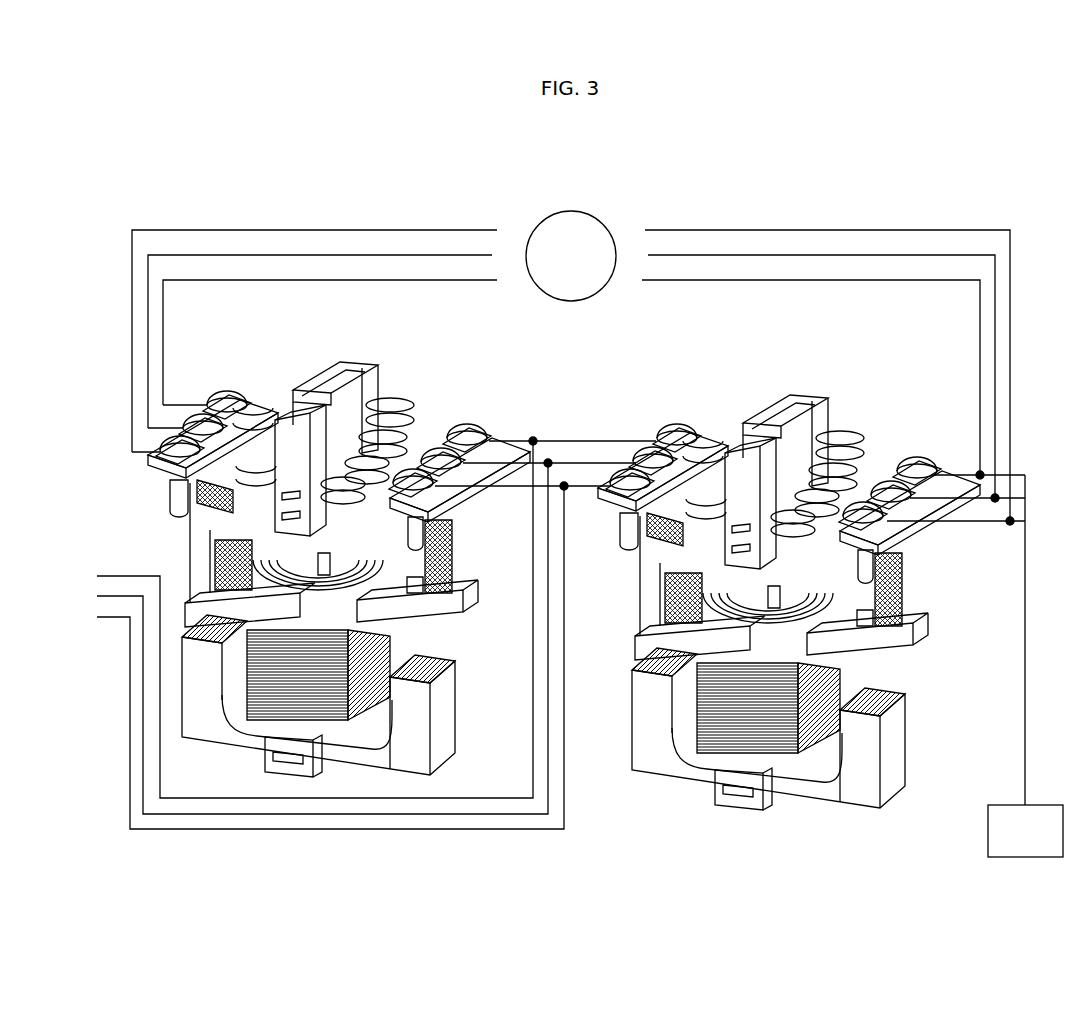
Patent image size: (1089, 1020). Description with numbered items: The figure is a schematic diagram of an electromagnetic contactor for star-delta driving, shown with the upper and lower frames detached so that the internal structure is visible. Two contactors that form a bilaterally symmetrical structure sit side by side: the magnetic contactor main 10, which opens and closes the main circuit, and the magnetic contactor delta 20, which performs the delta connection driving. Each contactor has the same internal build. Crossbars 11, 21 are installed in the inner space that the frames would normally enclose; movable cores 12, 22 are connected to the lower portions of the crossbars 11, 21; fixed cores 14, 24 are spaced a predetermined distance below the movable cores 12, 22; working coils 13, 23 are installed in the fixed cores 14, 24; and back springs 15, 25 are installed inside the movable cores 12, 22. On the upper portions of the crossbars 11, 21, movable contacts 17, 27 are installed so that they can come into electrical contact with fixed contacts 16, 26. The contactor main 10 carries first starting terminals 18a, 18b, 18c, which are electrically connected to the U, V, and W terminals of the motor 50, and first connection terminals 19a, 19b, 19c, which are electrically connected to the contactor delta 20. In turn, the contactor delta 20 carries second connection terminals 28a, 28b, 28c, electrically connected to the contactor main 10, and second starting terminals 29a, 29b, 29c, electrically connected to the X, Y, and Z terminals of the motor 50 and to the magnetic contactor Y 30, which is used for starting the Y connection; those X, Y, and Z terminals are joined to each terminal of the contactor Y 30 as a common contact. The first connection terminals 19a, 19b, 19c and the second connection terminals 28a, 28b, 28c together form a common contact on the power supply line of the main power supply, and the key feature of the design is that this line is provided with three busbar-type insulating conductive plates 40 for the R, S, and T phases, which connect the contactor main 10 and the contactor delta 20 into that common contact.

The magnetic contactor main 10 is at (276, 377).
The crossbar 11 is at (220, 512).
The movable core 12 is at (188, 600).
The working coil 13 is at (330, 717).
The fixed core 14 is at (188, 705).
The back spring 15 is at (318, 575).
The fixed contact 16 is at (410, 440).
The movable contact 17 is at (397, 400).
The first starting terminal 18a is at (213, 398).
The first starting terminal 18b is at (170, 420).
The first starting terminal 18c is at (156, 442).
The first connection terminal 19a is at (484, 430).
The first connection terminal 19b is at (458, 440).
The first connection terminal 19c is at (450, 520).
The magnetic contactor delta 20 is at (720, 393).
The crossbar 21 is at (663, 553).
The movable core 22 is at (633, 636).
The working coil 23 is at (782, 750).
The fixed core 24 is at (638, 740).
The back spring 25 is at (743, 623).
The fixed contact 26 is at (856, 460).
The movable contact 27 is at (842, 428).
The second connection terminal 28a is at (668, 427).
The second connection terminal 28b is at (647, 452).
The second connection terminal 28c is at (632, 500).
The second starting terminal 29a is at (942, 508).
The second starting terminal 29b is at (917, 533).
The second starting terminal 29c is at (903, 557).
The magnetic contactor Y 30 is at (1015, 845).
The insulating conductive plate 40 is at (488, 838).
The motor 50 is at (607, 190).